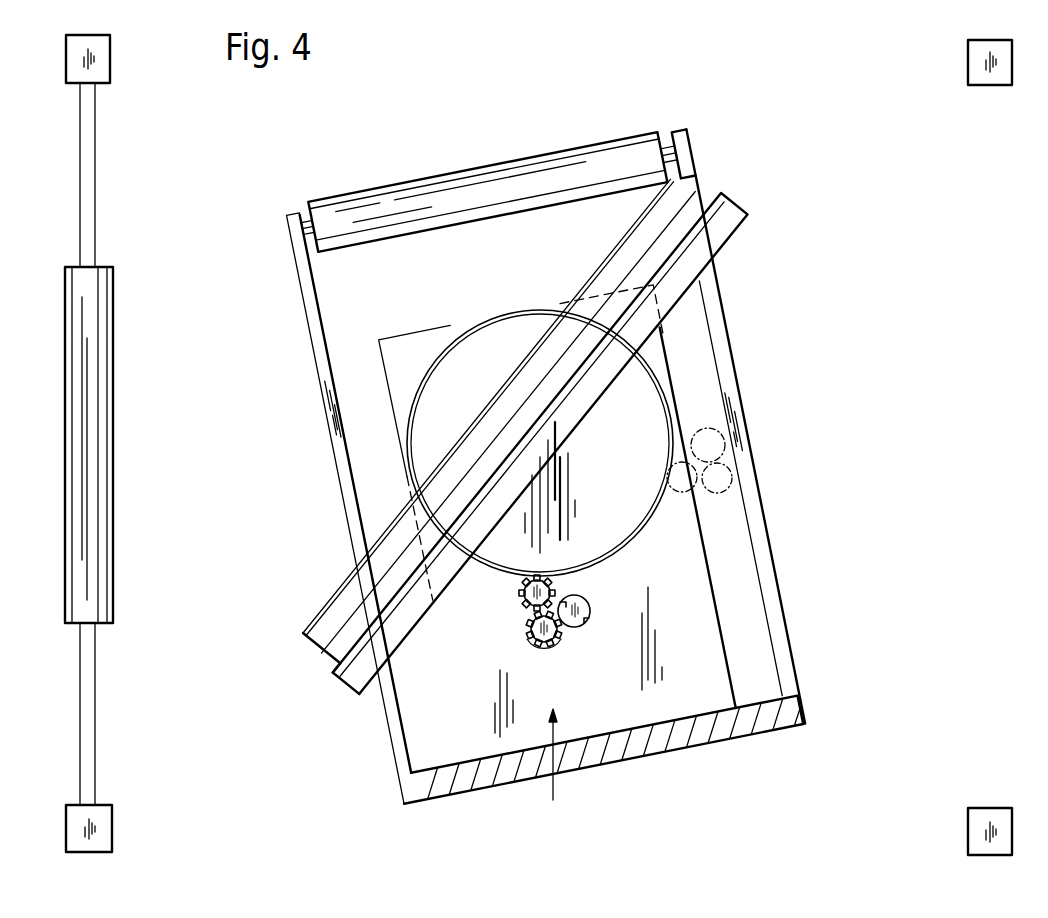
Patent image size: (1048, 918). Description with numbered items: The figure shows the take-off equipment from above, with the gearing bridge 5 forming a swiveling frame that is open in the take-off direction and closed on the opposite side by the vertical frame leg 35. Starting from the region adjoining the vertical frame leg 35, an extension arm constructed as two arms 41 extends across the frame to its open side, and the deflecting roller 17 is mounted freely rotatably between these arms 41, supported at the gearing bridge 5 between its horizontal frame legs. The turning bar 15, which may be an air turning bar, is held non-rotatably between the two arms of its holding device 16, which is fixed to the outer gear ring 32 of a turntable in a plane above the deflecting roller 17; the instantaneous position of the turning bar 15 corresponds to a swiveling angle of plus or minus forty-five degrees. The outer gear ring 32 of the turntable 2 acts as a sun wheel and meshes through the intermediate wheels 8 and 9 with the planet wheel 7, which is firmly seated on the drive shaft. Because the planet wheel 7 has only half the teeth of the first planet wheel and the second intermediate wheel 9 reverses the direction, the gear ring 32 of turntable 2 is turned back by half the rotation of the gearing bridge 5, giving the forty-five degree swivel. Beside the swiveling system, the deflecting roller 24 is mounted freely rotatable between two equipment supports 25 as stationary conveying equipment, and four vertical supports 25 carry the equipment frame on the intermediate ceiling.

The turntable 2 is at (445, 346).
The gearing bridge 5 is at (578, 714).
The planet wheel 7 is at (585, 625).
The intermediate wheel 8 is at (552, 640).
The intermediate wheel 9 is at (521, 600).
The turning bar 15 is at (340, 625).
The holding device 16 is at (342, 676).
The deflecting roller 17 is at (450, 192).
The deflecting roller 24 is at (92, 400).
The vertical support 25 is at (98, 62).
The outer gear ring 32 is at (654, 522).
The vertical frame leg 35 is at (708, 735).
The arm 41 is at (335, 432).